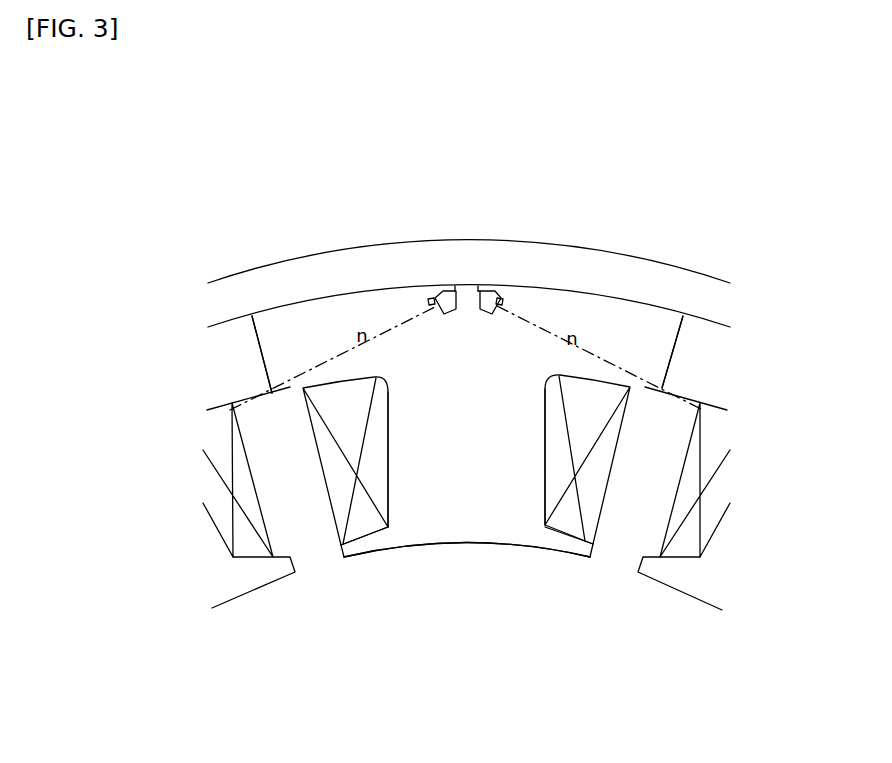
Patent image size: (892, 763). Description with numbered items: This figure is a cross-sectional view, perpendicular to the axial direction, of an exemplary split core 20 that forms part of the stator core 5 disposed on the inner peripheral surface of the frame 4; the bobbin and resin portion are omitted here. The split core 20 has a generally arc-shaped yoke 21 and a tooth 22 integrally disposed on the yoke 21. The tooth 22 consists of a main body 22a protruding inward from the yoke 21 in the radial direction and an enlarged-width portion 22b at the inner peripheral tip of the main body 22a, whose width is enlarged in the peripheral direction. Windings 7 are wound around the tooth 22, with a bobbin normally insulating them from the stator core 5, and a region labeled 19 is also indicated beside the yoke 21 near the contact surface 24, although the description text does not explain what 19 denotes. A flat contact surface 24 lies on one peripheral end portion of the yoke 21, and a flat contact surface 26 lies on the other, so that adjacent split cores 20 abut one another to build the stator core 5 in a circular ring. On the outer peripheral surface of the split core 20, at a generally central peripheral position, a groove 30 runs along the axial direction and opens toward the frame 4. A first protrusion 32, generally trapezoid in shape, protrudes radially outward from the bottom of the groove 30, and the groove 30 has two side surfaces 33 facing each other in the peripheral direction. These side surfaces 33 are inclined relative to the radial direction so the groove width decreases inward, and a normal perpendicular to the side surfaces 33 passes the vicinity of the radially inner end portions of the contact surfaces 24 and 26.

The frame 4 is at (615, 270).
The stator core 5 is at (330, 296).
The windings 7 is at (360, 513).
The slot 19 is at (285, 389).
The split core 20 is at (245, 592).
The yoke 21 is at (377, 303).
The tooth 22 is at (408, 625).
The main body 22a is at (470, 452).
The enlarged-width portion 22b is at (440, 527).
The contact surface 24 is at (260, 357).
The contact surface 26 is at (258, 342).
The groove 30 is at (464, 284).
The first protrusion 32 is at (457, 310).
The side surfaces 33 is at (481, 309).